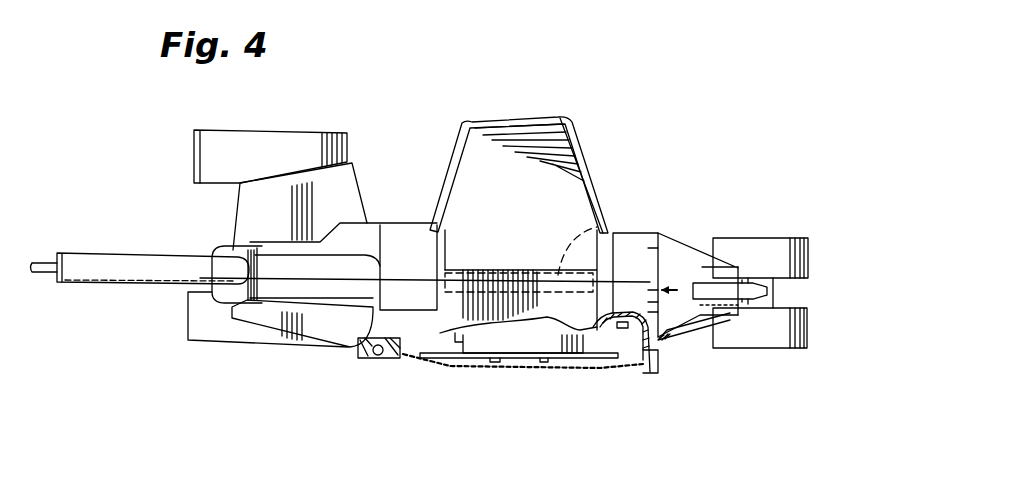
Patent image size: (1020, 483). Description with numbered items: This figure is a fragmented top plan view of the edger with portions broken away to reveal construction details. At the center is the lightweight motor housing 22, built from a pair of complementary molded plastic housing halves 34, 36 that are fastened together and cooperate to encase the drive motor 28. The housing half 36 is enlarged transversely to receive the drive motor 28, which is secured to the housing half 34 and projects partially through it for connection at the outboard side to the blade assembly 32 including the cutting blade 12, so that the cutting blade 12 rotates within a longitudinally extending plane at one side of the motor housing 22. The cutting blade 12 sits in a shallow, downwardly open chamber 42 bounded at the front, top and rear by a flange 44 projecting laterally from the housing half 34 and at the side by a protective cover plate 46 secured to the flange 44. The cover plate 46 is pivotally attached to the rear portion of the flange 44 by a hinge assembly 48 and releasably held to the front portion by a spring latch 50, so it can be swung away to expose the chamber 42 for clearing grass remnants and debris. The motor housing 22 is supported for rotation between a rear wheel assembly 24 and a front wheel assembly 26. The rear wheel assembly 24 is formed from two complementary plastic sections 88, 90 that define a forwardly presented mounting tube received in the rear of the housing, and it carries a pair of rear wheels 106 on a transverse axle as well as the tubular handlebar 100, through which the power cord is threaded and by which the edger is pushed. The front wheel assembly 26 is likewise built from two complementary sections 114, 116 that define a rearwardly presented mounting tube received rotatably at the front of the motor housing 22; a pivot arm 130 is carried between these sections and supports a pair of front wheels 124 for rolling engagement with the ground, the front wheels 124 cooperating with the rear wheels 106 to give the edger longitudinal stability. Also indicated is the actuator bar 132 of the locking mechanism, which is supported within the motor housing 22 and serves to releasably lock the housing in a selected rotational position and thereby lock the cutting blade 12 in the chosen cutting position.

The cutting blade 12 is at (563, 360).
The motor housing 22 is at (549, 107).
The rear wheel assembly 24 is at (355, 151).
The front wheel assembly 26 is at (694, 201).
The drive motor 28 is at (537, 333).
The blade assembly 32 is at (517, 366).
The housing half 34 is at (470, 305).
The housing half 36 is at (568, 200).
The chamber 42 is at (439, 334).
The flange 44 is at (412, 333).
The cover plate 46 is at (610, 367).
The hinge assembly 48 is at (366, 366).
The spring latch 50 is at (657, 368).
The section 88 is at (320, 290).
The section 90 is at (270, 258).
The handlebar 100 is at (95, 263).
The rear wheels 106 is at (232, 142).
The section 114 is at (717, 317).
The section 116 is at (675, 252).
The front wheels 124 is at (808, 265).
The pivot arm 130 is at (743, 290).
The actuator bar 132 is at (600, 217).